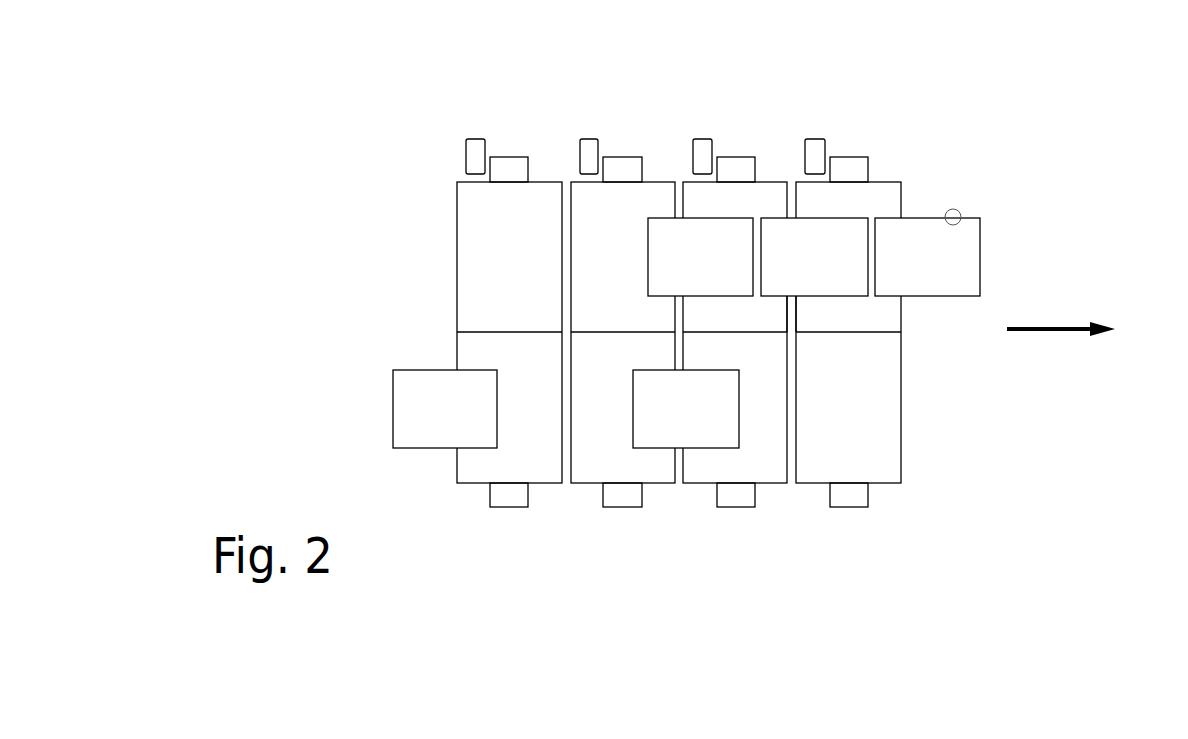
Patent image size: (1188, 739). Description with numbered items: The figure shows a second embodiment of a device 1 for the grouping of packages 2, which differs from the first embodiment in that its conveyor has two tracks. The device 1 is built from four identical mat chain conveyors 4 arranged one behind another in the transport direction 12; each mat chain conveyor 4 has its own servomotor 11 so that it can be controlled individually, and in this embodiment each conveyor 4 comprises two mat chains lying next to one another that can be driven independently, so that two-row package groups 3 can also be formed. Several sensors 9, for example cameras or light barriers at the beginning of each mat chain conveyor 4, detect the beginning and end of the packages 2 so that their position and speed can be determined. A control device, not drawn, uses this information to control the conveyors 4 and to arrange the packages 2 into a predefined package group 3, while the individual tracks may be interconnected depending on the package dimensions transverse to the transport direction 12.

The device for the grouping of packages 1 is at (723, 321).
The package 2 is at (917, 253).
The package group 3 is at (850, 311).
The mat chain conveyor 4 is at (517, 262).
The sensor 9 is at (475, 153).
The servomotor 11 is at (513, 170).
The transport direction 12 is at (1053, 327).